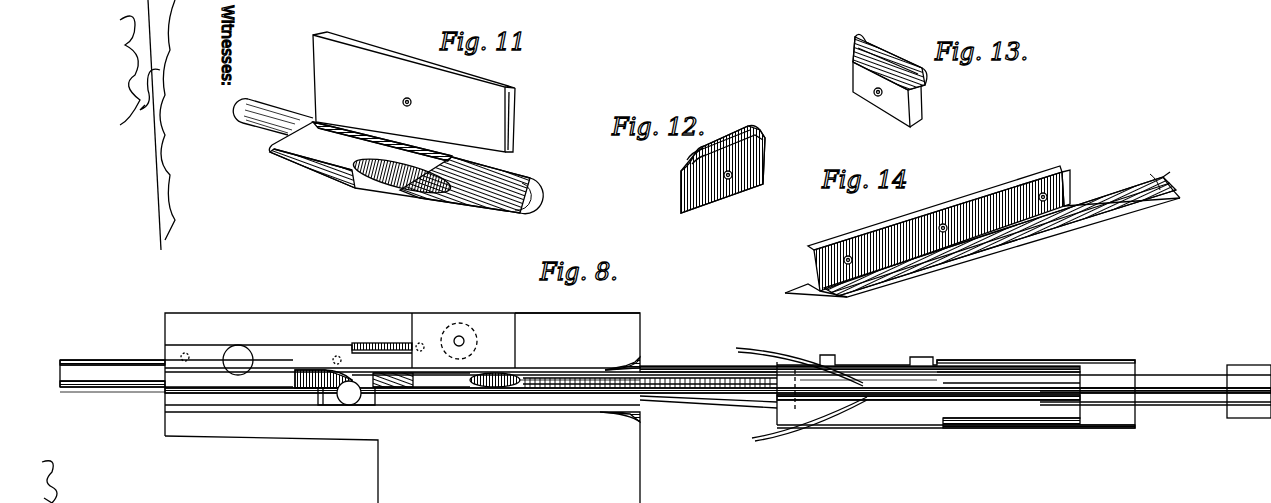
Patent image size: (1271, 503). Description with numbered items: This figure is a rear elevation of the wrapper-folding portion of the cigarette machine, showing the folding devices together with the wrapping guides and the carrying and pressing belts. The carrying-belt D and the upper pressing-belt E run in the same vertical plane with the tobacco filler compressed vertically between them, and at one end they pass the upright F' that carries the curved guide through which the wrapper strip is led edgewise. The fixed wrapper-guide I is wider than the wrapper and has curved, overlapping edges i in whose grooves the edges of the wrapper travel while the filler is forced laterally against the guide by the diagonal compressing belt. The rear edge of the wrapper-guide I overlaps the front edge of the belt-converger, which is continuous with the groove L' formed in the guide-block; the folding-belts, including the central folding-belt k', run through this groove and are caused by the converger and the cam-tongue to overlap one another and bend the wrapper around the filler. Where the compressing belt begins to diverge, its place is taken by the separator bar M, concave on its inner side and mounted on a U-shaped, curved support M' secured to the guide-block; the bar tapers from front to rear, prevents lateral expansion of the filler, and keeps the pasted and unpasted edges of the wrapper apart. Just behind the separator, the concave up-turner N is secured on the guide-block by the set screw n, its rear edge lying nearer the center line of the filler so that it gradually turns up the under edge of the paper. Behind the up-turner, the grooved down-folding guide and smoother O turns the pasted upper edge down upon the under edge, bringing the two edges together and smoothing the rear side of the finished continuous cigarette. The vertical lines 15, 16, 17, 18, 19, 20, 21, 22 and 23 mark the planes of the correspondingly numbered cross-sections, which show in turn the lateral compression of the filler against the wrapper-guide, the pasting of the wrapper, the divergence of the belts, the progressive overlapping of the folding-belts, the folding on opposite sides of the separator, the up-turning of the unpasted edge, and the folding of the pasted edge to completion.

In FIG. 11, the U-shaped curved support M' is at (343, 149).
In FIG. 8, the U-shaped curved support M' is at (446, 376).
In FIG. 11, the separator bar M is at (453, 185).
In FIG. 8, the separator bar M is at (580, 362).
In FIG. 12, the up-turner N is at (723, 170).
In FIG. 13, the up-turner N is at (888, 80).
In FIG. 8, the up-turner N is at (336, 400).
In FIG. 8, the set screw n is at (346, 393).
In FIG. 14, the down-folding guide and smoother O is at (982, 231).
In FIG. 8, the down-folding guide and smoother O is at (245, 366).
In FIG. 8, the central folding-belt k' is at (718, 396).
In FIG. 8, the groove L' is at (589, 335).
In FIG. 8, the wrapper-guide I is at (935, 392).
In FIG. 8, the curved overlapping edges i is at (1000, 370).
In FIG. 8, the pressing-belt E is at (1165, 389).
In FIG. 8, the carrying-belt D is at (1140, 404).
In FIG. 8, the upright F' is at (1249, 391).
In FIG. 8, the section line 15 is at (1050, 457).
In FIG. 8, the section line 16 is at (923, 465).
In FIG. 8, the section line 17 is at (867, 465).
In FIG. 8, the section line 18 is at (732, 442).
In FIG. 8, the section line 19 is at (588, 447).
In FIG. 8, the section line 20 is at (450, 443).
In FIG. 8, the section line 21 is at (343, 450).
In FIG. 8, the section line 22 is at (307, 453).
In FIG. 8, the section line 23 is at (210, 453).